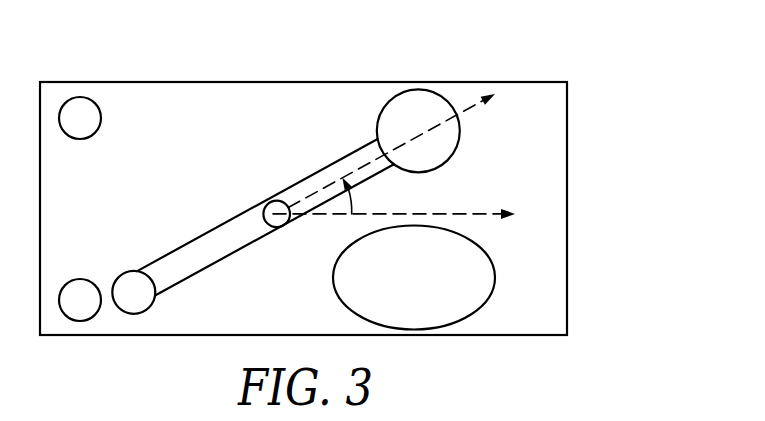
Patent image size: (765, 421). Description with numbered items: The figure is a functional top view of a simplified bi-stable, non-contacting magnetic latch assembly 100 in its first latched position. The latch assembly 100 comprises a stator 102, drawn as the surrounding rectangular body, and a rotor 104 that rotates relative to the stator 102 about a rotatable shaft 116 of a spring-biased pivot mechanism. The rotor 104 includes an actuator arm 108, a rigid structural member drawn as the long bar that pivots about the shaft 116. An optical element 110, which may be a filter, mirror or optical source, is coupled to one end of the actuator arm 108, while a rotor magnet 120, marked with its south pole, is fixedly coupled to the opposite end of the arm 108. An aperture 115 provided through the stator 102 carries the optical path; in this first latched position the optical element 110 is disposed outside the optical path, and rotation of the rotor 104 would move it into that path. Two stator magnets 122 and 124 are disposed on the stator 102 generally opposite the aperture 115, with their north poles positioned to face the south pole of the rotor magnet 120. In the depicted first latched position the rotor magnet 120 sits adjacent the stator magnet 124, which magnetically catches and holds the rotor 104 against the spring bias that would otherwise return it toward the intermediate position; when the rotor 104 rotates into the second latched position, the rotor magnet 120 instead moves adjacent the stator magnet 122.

The magnetic latch assembly 100 is at (618, 48).
The stator 102 is at (228, 127).
The rotor 104 is at (214, 215).
The actuator arm 108 is at (207, 268).
The optical element 110 is at (445, 161).
The aperture 115 is at (428, 291).
The rotatable shaft 116 is at (280, 228).
The rotor magnet 120 is at (134, 271).
The stator magnet 122 is at (99, 110).
The stator magnet 124 is at (80, 279).